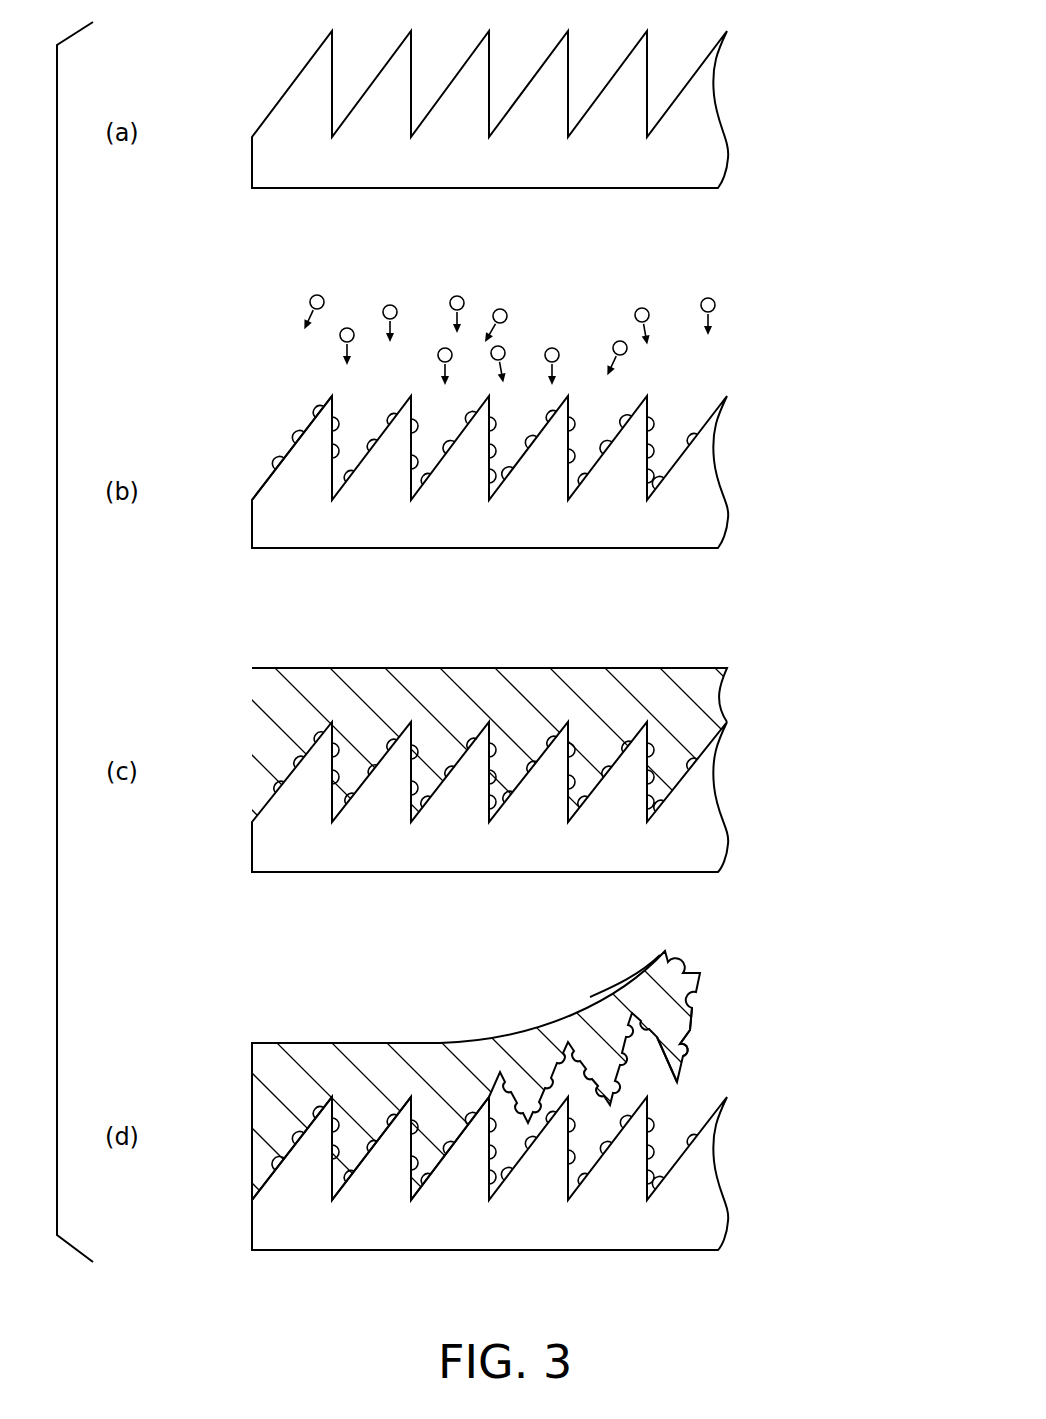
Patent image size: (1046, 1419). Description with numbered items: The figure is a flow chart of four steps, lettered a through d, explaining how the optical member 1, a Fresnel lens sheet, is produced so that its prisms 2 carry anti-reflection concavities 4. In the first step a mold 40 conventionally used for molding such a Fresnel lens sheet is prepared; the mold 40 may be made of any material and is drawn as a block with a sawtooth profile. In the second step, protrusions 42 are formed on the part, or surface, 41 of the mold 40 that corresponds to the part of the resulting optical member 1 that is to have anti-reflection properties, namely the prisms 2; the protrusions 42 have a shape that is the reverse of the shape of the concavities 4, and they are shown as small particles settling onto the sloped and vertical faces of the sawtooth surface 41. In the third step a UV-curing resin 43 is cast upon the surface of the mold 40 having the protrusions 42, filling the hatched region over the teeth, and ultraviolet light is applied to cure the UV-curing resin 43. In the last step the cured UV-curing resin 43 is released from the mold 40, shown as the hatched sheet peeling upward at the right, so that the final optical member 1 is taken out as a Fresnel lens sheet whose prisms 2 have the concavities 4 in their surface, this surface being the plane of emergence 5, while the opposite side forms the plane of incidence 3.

The mold 40 is at (743, 163).
The part (surface) of the mold 41 is at (262, 487).
The protrusions 42 is at (293, 433).
The UV-curing resin 43 is at (697, 692).
The optical member 1 is at (726, 985).
The prisms 2 is at (658, 1045).
The plane of incidence 3 is at (617, 988).
The concavities 4 is at (681, 1050).
The plane of emergence 5 is at (690, 1030).